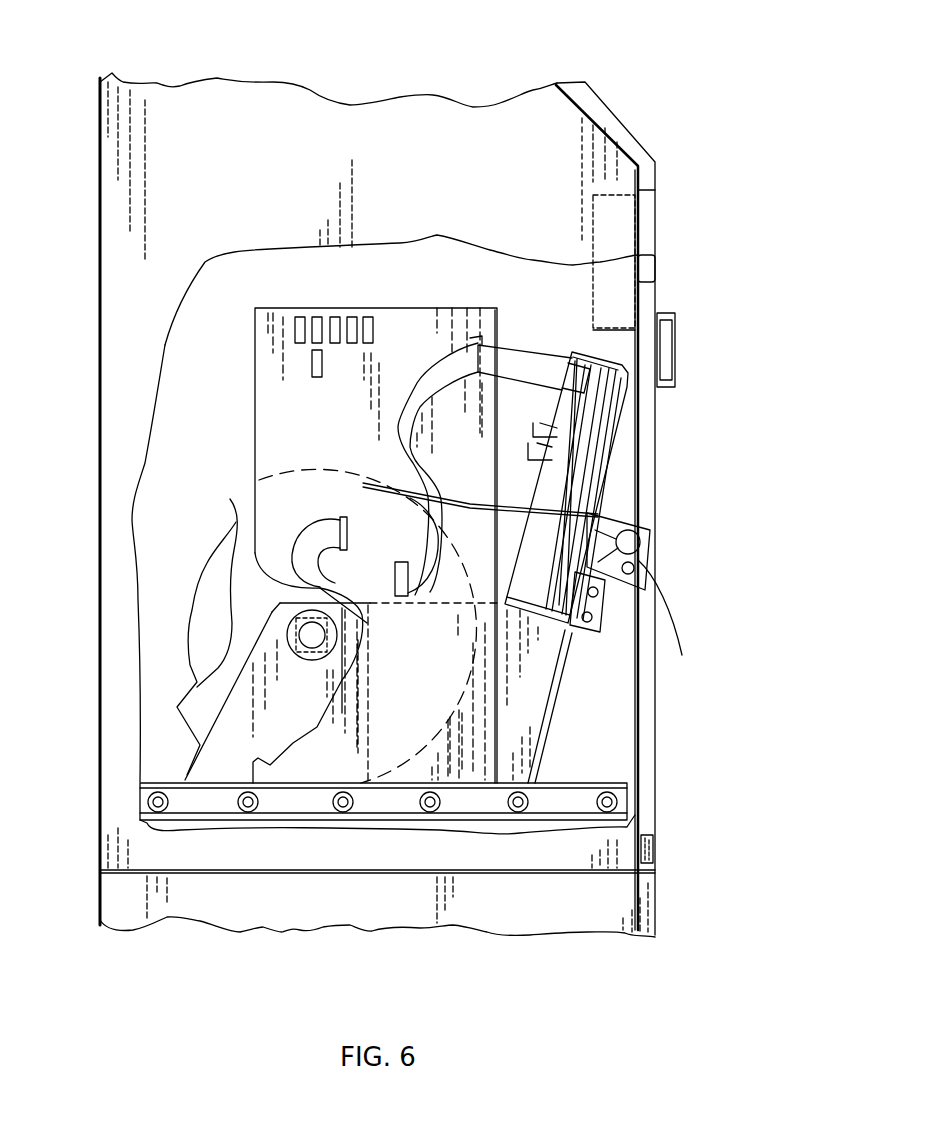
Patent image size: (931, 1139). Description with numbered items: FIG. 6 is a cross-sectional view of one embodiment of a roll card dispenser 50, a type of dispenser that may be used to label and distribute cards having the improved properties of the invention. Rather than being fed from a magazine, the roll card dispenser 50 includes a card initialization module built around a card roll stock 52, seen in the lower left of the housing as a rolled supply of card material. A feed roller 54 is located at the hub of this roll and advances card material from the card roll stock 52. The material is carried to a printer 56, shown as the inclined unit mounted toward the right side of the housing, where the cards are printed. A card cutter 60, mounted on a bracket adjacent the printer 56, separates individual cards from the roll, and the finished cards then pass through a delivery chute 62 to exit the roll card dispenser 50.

The roll card dispenser 50 is at (702, 110).
The card roll stock 52 is at (186, 592).
The feed roller 54 is at (310, 660).
The printer 56 is at (614, 443).
The card cutter 60 is at (633, 537).
The delivery chute 62 is at (641, 545).